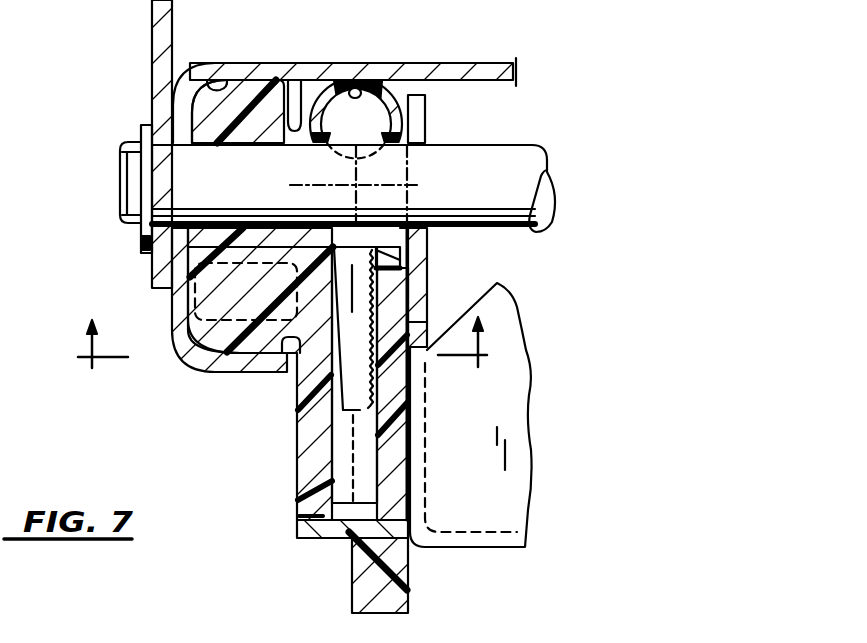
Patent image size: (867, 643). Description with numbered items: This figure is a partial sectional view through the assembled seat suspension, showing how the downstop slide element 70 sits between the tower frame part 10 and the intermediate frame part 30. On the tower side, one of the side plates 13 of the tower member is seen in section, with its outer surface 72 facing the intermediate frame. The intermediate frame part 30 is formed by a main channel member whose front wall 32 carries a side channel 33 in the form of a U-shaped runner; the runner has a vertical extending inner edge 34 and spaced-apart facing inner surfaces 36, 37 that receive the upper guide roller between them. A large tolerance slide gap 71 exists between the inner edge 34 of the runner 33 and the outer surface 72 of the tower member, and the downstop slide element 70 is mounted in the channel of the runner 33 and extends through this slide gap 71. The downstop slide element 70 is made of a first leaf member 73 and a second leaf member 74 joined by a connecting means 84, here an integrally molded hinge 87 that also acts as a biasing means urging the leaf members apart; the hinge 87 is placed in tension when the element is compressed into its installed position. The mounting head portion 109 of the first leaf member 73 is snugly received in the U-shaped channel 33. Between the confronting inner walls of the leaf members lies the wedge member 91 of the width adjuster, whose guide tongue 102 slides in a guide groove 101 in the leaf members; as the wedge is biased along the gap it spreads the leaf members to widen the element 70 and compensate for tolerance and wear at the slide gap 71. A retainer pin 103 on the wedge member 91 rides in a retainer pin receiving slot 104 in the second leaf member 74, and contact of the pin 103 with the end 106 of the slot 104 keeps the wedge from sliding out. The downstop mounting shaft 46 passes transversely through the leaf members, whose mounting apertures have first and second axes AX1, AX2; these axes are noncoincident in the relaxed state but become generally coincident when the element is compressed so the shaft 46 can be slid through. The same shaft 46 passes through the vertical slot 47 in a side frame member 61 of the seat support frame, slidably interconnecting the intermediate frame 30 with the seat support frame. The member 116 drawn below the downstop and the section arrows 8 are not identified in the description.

The tower frame part 10 is at (505, 557).
The side plate 13 is at (427, 323).
The intermediate frame part 30 is at (174, 362).
The front wall 32 is at (494, 62).
The side channel 33 is at (180, 338).
The vertical extending inner edge 34 is at (273, 360).
The inner surface 36 is at (211, 88).
The inner surface 37 is at (197, 320).
The downstop mounting shaft 46 is at (120, 185).
The slot 47 is at (120, 153).
The side frame member 61 is at (151, 29).
The downstop slide element 70 is at (290, 546).
The slide gap 71 is at (288, 368).
The outer surface 72 is at (297, 435).
The first leaf member 73 is at (320, 478).
The second leaf member 74 is at (402, 492).
The connecting means 84 is at (388, 82).
The integral hinge means 87 is at (362, 85).
The wedge member 91 is at (297, 290).
The guide groove 101 is at (337, 460).
The guide tongue 102 is at (292, 510).
The retainer pin 103 is at (422, 245).
The retainer pin receiving slot 104 is at (393, 285).
The end of slot 106 is at (427, 352).
The mounting head portion 109 is at (247, 88).
The base plate 116 is at (352, 600).
The section line 8- 8 is at (280, 342).
The first axis AX1 is at (305, 185).
The second axis AX2 is at (420, 185).